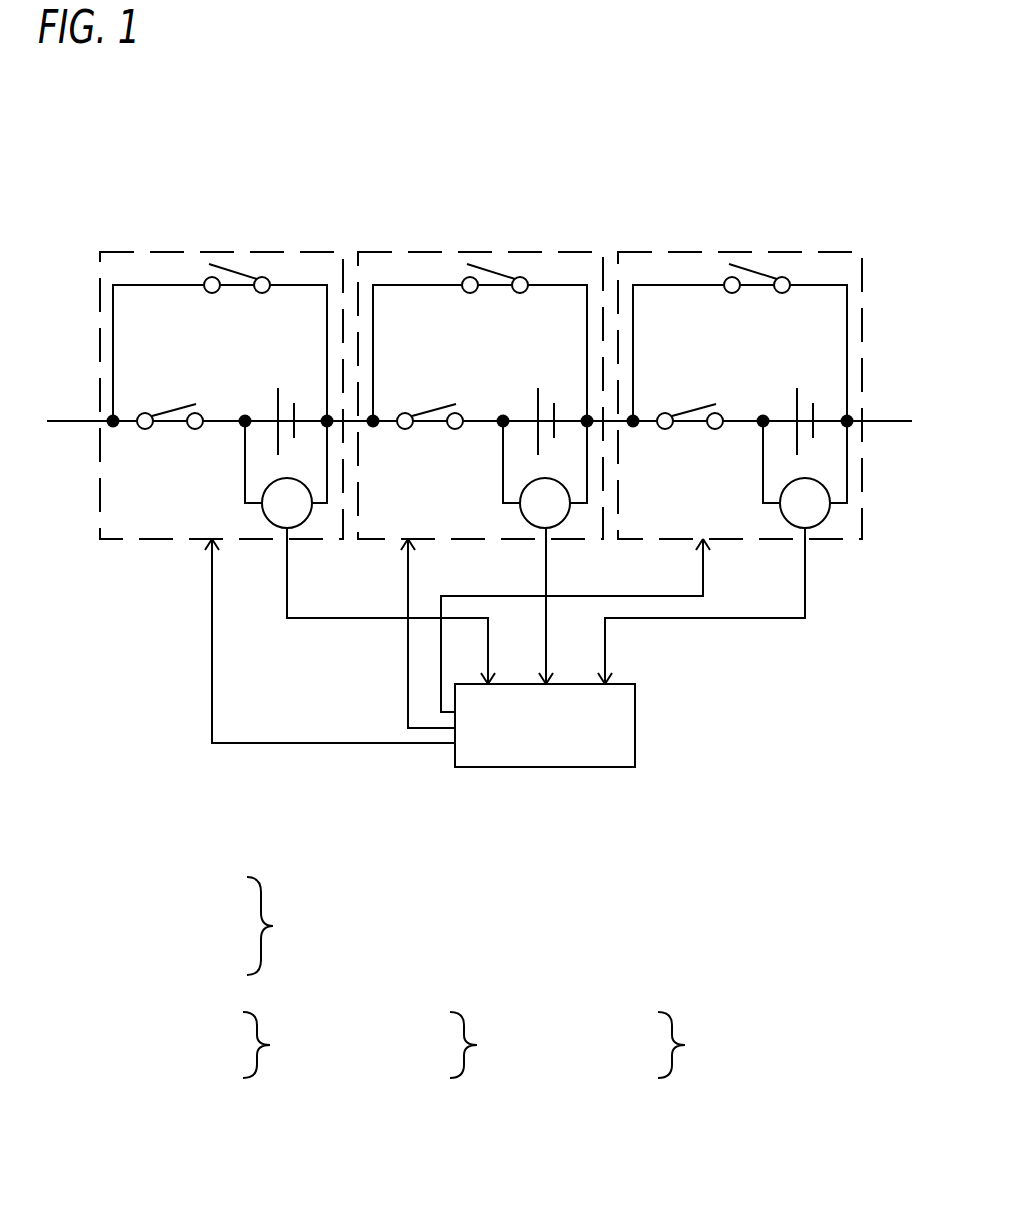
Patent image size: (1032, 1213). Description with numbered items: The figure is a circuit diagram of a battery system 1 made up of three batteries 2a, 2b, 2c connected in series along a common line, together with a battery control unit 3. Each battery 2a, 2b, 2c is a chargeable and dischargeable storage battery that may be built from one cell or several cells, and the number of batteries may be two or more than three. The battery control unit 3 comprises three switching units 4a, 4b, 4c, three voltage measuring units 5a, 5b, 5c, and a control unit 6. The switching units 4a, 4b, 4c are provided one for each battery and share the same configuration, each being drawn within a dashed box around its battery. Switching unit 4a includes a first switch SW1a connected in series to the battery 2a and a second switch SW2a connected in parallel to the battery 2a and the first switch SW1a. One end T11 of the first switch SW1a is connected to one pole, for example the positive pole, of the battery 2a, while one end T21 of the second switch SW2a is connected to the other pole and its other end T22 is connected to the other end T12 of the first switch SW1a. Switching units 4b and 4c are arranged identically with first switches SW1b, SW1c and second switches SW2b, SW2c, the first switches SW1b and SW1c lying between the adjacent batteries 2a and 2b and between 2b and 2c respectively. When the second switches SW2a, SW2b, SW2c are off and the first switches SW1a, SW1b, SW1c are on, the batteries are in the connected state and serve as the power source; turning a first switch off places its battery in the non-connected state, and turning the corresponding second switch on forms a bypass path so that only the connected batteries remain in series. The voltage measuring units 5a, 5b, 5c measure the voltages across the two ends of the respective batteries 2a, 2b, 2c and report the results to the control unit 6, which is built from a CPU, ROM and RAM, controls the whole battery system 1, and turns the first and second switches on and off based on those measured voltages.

The battery system 1 is at (857, 203).
The battery 2a is at (277, 403).
The battery 2b is at (537, 403).
The battery 2c is at (796, 403).
The battery control unit 3 is at (224, 926).
The switching unit 4a is at (241, 1045).
The switching unit 4b is at (447, 1045).
The switching unit 4c is at (656, 1045).
The voltage measuring unit 5a is at (268, 523).
The voltage measuring unit 5b is at (527, 523).
The voltage measuring unit 5c is at (788, 524).
The control unit 6 is at (637, 724).
The first switch SW1a is at (167, 409).
The first switch SW1b is at (427, 409).
The first switch SW1c is at (687, 409).
The second switch SW2a is at (233, 267).
The second switch SW2b is at (493, 267).
The second switch SW2c is at (755, 267).
The one end of the first switch T11 is at (215, 423).
The other end of the first switch T12 is at (107, 423).
The one end of the second switch T21 is at (277, 281).
The other end of the second switch T22 is at (180, 283).